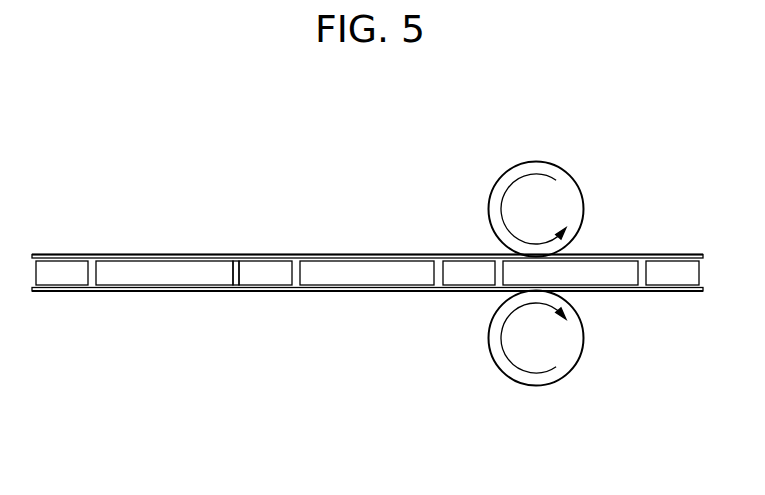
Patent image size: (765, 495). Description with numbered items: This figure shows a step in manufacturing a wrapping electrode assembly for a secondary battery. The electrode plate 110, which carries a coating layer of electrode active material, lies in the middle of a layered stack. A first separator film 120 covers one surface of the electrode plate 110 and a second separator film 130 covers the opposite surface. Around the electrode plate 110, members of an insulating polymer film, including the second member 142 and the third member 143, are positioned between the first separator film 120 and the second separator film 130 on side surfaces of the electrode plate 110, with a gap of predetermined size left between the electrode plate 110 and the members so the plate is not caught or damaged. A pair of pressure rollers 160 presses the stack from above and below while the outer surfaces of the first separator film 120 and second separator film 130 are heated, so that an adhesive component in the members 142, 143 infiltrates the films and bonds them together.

The electrode plate 110 is at (152, 277).
The first separator film 120 is at (239, 255).
The second separator film 130 is at (233, 290).
The second member 142 is at (58, 277).
The third member 143 is at (268, 278).
The pressure roller 160 is at (535, 161).